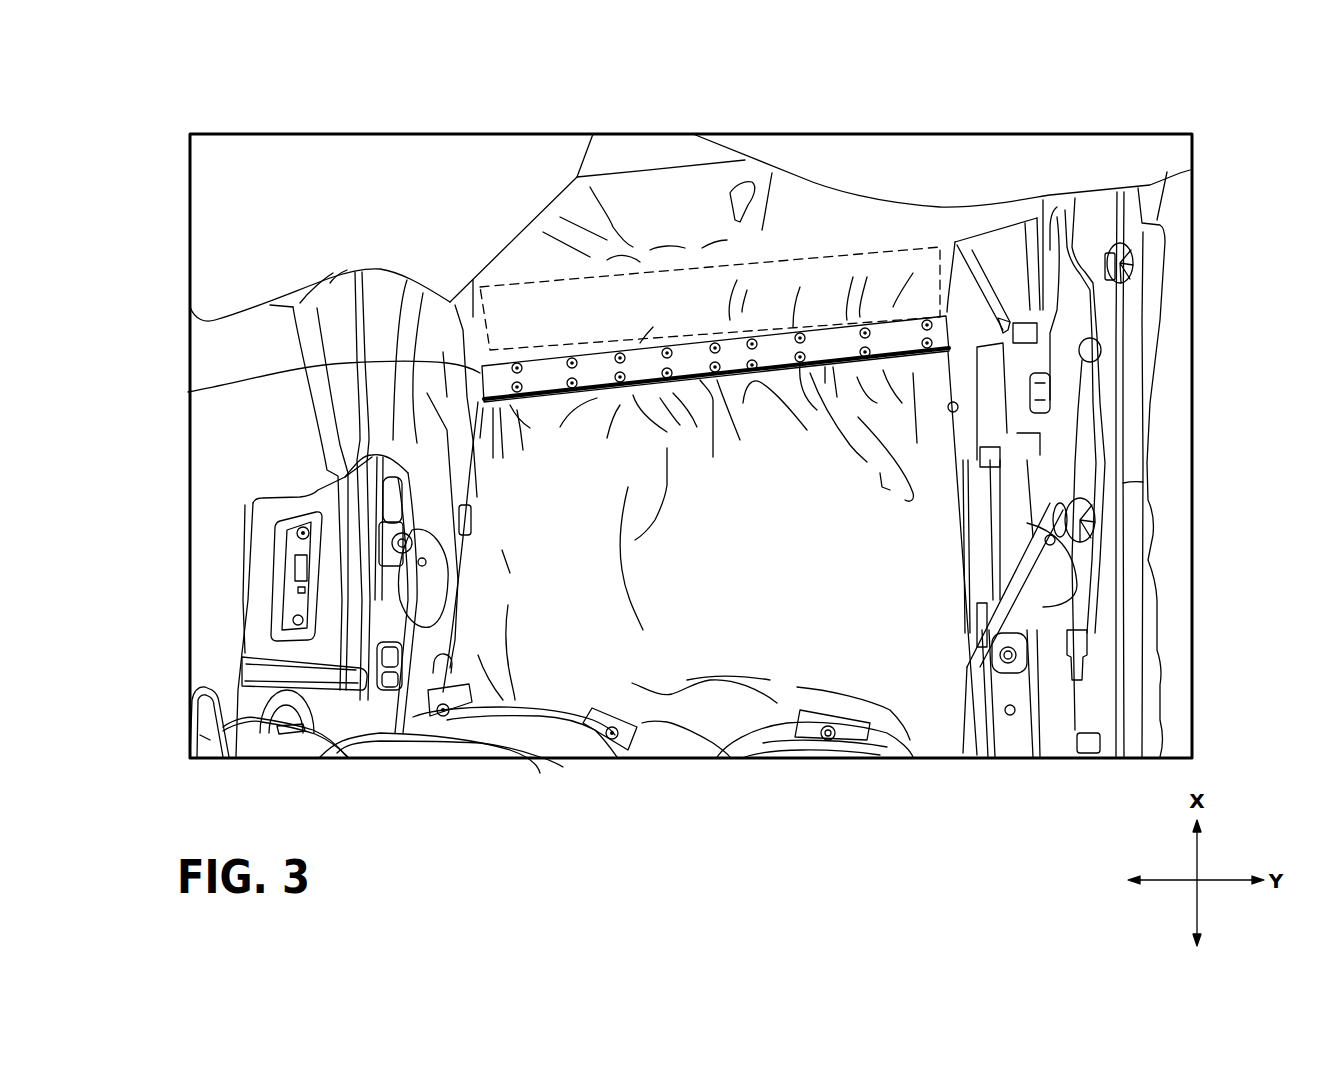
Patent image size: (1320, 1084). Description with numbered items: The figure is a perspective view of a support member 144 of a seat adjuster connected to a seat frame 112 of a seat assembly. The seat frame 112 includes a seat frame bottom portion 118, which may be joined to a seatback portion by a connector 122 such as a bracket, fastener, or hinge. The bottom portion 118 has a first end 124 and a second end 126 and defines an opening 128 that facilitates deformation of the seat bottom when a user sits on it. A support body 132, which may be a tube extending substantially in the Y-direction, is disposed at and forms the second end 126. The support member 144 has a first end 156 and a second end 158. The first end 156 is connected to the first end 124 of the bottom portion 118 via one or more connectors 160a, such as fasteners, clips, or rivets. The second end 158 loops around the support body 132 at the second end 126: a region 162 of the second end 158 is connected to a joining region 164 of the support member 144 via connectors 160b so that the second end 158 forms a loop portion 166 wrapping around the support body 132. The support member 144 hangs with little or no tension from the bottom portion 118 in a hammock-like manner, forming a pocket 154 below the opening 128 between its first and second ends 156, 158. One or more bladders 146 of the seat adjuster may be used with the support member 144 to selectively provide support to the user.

The seat frame 112 is at (1170, 242).
The seat frame bottom portion 118 is at (1150, 640).
The connector 122 is at (352, 387).
The first end 124 is at (1123, 743).
The second end 126 is at (590, 275).
The opening 128 is at (473, 447).
The support body 132 is at (727, 243).
The support member 144 is at (910, 640).
The bladder 146 is at (540, 773).
The pocket 154 is at (897, 578).
The first end 156 is at (913, 748).
The second end 158 is at (940, 373).
The connector 160a is at (638, 738).
The connector 160b is at (188, 392).
The region 162 is at (527, 346).
The joining region 164 is at (551, 402).
The loop portion 166 is at (473, 343).